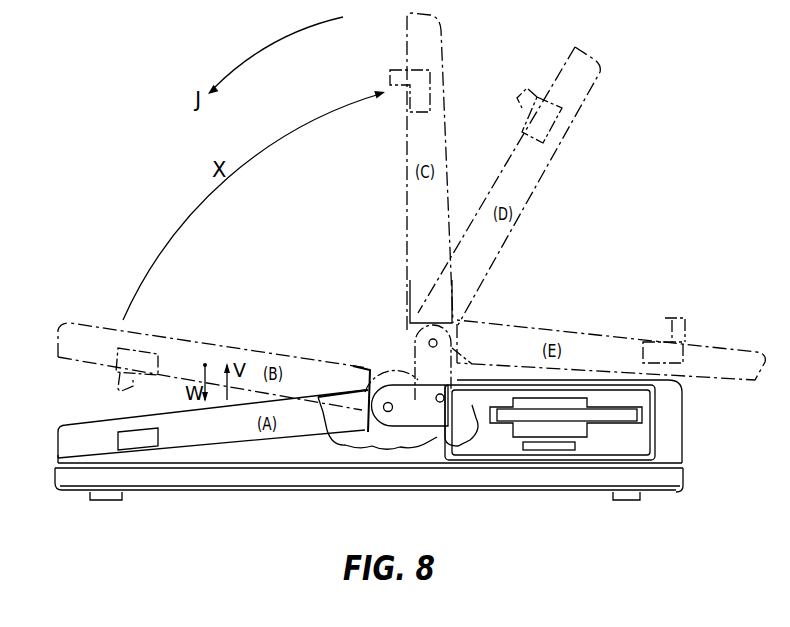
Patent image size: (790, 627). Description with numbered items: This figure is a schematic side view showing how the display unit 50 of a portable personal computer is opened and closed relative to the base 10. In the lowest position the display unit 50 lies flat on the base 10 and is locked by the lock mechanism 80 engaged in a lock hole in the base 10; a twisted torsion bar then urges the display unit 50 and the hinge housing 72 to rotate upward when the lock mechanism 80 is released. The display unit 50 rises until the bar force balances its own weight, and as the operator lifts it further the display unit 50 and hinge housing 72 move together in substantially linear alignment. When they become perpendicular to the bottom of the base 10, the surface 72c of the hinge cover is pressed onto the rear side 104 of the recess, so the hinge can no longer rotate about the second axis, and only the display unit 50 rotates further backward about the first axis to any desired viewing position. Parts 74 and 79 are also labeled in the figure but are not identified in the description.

The base 10 is at (383, 463).
The rear side of recess 104 is at (440, 442).
The display unit 50 is at (102, 327).
The lock mechanism 80 is at (150, 437).
The support member 74 is at (355, 368).
The hinge housing 72 is at (388, 385).
The surface of hinge cover 72c is at (470, 372).
The pivot pin 79 is at (447, 399).